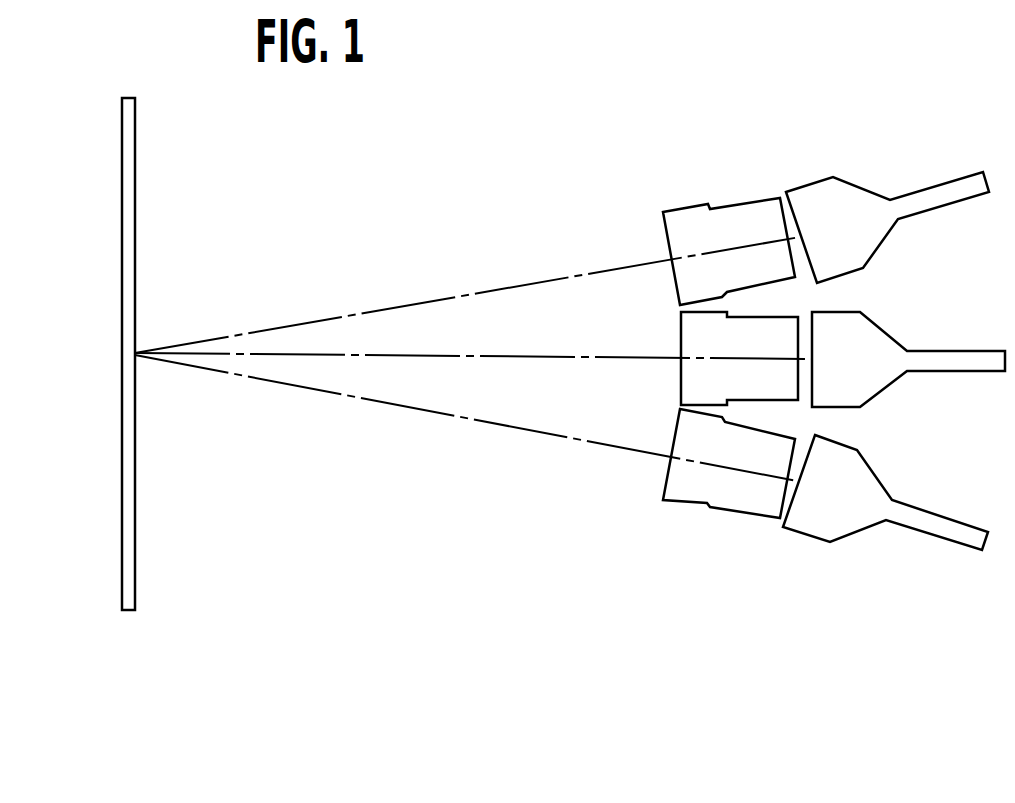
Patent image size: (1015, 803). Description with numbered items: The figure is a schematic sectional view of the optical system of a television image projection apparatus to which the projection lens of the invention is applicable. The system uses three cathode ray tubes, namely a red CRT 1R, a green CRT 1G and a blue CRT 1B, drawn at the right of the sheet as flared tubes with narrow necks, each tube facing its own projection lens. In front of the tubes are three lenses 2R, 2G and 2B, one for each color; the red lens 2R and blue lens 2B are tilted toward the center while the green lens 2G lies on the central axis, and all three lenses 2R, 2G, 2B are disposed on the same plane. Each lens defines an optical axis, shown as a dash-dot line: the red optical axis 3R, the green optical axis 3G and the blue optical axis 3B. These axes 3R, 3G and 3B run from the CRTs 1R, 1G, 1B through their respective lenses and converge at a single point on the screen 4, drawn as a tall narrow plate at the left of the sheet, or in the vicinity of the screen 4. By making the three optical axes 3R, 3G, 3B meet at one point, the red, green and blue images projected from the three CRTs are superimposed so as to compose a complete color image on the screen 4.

The screen 4 is at (132, 162).
The red CRT 1R is at (875, 192).
The green CRT 1G is at (887, 340).
The blue CRT 1B is at (870, 477).
The red projection lens 2R is at (728, 217).
The green projection lens 2G is at (690, 377).
The blue projection lens 2B is at (720, 498).
The red optical axis 3R is at (531, 284).
The green optical axis 3G is at (545, 356).
The blue optical axis 3B is at (540, 431).